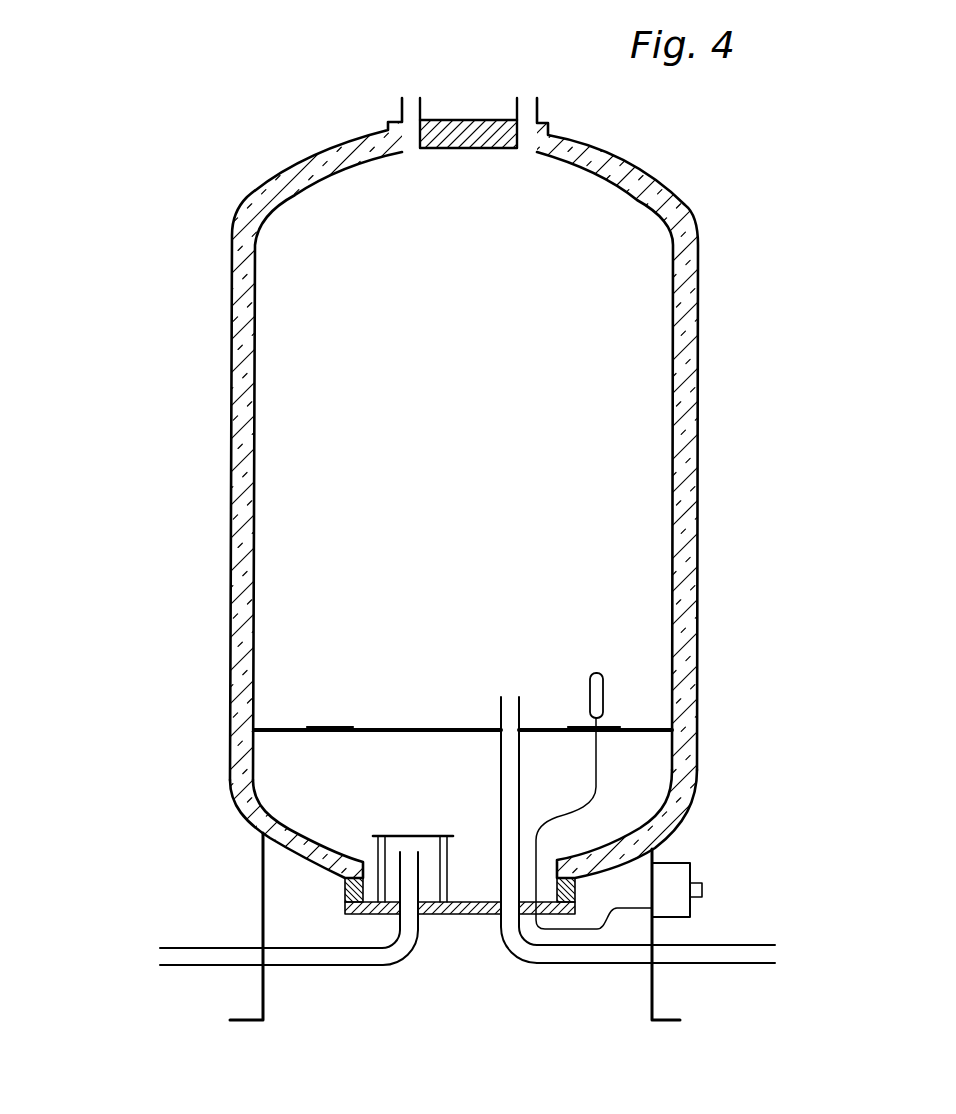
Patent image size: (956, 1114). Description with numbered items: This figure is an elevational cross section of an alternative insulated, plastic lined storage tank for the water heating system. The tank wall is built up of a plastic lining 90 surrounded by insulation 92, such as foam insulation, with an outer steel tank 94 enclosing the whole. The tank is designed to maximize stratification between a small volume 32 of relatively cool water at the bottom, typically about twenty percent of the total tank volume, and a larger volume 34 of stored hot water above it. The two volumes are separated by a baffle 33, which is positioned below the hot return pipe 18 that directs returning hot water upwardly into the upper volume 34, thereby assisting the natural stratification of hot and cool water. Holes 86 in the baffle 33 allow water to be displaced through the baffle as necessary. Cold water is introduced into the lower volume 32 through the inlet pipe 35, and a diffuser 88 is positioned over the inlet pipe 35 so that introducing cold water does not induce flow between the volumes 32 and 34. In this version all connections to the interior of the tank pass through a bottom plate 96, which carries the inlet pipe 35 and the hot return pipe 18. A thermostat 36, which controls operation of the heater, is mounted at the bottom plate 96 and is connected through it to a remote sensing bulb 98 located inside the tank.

The hot return pipe 18 is at (757, 945).
The small volume of relatively cool water 32 is at (648, 793).
The baffle 33 is at (255, 734).
The larger volume of stored hot water 34 is at (478, 500).
The inlet pipe 35 is at (223, 967).
The thermostat 36 is at (692, 872).
The holes in the baffle 86 is at (328, 728).
The diffuser 88 is at (393, 833).
The plastic lining 90 is at (673, 435).
The insulation 92 is at (689, 494).
The outer steel tank 94 is at (697, 536).
The bottom plate 96 is at (475, 918).
The remote sensing bulb 98 is at (603, 692).